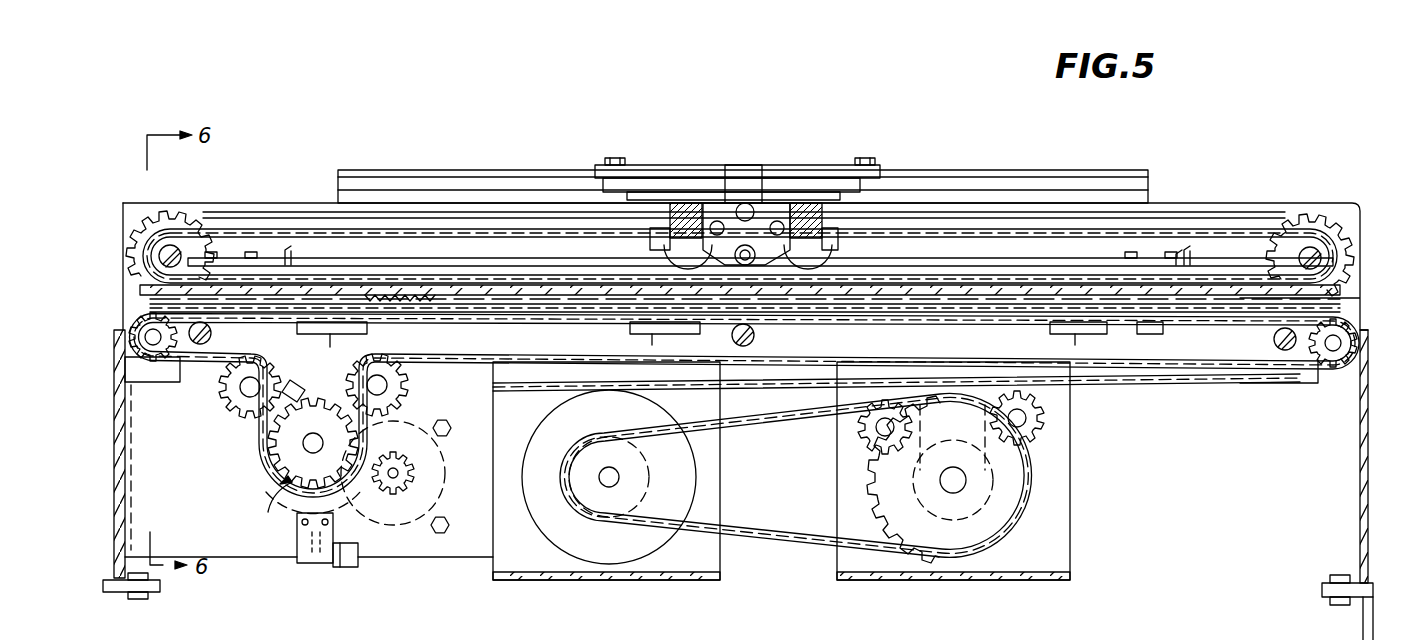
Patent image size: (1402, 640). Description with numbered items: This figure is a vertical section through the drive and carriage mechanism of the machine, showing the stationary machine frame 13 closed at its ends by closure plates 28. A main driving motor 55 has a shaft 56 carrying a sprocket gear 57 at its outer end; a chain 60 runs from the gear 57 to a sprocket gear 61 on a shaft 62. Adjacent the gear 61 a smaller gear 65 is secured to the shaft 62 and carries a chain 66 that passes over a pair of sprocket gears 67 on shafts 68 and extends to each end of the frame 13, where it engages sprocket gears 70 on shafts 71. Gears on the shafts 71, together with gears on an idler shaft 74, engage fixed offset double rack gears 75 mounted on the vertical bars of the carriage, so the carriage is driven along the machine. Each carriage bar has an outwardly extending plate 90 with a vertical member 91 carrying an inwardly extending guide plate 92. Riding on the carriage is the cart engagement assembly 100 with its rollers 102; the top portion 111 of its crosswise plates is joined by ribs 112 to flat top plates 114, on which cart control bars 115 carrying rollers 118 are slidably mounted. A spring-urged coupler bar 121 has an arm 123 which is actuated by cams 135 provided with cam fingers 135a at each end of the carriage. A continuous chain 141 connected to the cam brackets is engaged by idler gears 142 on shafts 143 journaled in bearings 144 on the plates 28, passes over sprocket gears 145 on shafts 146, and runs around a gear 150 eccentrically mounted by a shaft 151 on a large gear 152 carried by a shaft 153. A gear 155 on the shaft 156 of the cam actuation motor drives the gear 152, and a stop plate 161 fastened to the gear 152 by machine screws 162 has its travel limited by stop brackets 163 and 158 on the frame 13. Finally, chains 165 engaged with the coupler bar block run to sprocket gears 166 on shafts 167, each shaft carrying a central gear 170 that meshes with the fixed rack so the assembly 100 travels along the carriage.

The machine frame 13 is at (580, 580).
The closure plates 28 is at (124, 400).
The main driving motor 55 is at (690, 487).
The shaft 56 is at (615, 478).
The sprocket gear 57 is at (600, 495).
The chain 60 is at (752, 535).
The sprocket gear 61 is at (1000, 497).
The shaft 62 is at (948, 478).
The gear 65 is at (958, 432).
The chain 66 is at (1180, 386).
The sprocket gears 67 is at (893, 401).
The shafts 68 is at (878, 428).
The sprocket gears 70 is at (1256, 370).
The shafts 71 is at (212, 334).
The idler shaft 74 is at (748, 347).
The fixed offset double rack gears 75 is at (432, 297).
The horizontal outwardly extending plate 90 is at (1040, 204).
The vertical upwardly extending member 91 is at (995, 192).
The horizontal inwardly extending guide plate 92 is at (945, 178).
The cart engagement assembly 100 is at (739, 177).
The rollers 102 is at (662, 258).
The top portion 111 is at (645, 200).
The ribs 112 is at (826, 200).
The flat horizontal top plates 114 is at (790, 188).
The cart control bar 115 is at (700, 182).
The rollers 118 is at (625, 165).
The coupler bar 121 is at (760, 165).
The arm 123 is at (745, 225).
The cams 135 is at (762, 249).
The cam fingers 135a is at (1178, 262).
The continuous chain 141 is at (870, 356).
The idler gears 142 is at (143, 334).
The shafts 143 is at (150, 335).
The bearings 144 is at (128, 365).
The sprocket gears 145 is at (228, 382).
The shafts 146 is at (250, 387).
The gear 150 is at (288, 443).
The shaft 151 is at (315, 435).
The large gear 152 is at (365, 525).
The shaft 153 is at (262, 482).
The gear 155 is at (415, 471).
The shaft 156 is at (400, 475).
The stop bracket 158 is at (279, 364).
The stop plate 161 is at (310, 565).
The machine screws 162 is at (299, 495).
The stop bracket 163 is at (350, 568).
The chains 165 is at (1192, 232).
The sprocket gears 166 is at (163, 235).
The shafts 167 is at (159, 257).
The gear 170 is at (185, 222).